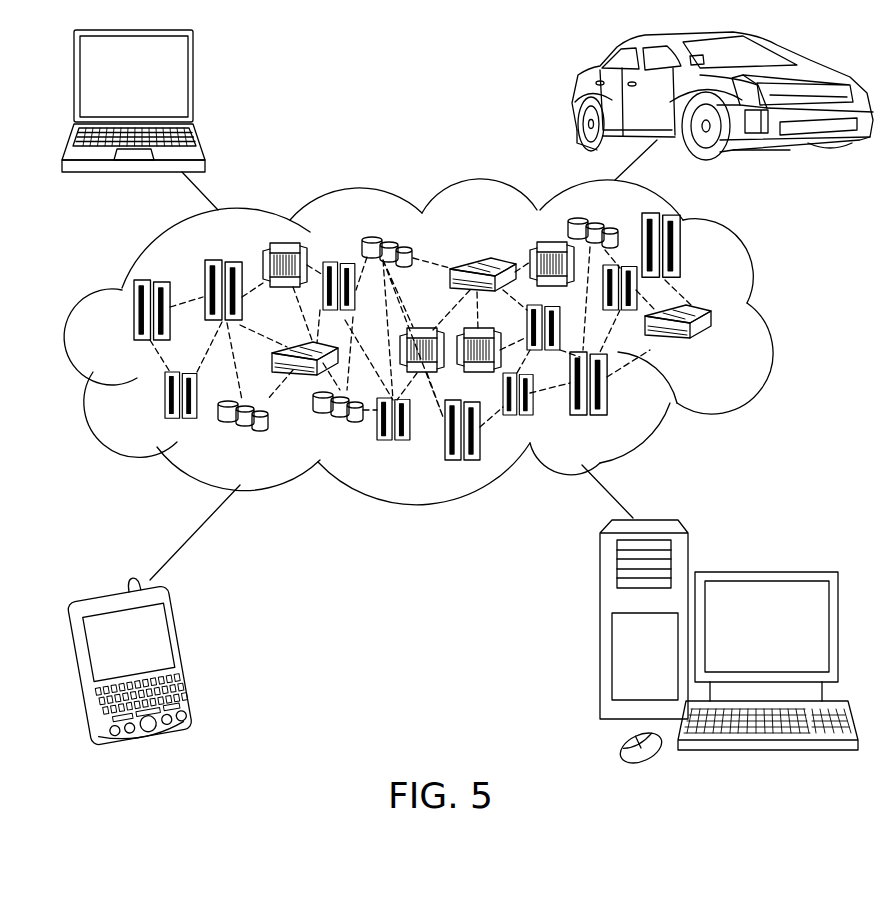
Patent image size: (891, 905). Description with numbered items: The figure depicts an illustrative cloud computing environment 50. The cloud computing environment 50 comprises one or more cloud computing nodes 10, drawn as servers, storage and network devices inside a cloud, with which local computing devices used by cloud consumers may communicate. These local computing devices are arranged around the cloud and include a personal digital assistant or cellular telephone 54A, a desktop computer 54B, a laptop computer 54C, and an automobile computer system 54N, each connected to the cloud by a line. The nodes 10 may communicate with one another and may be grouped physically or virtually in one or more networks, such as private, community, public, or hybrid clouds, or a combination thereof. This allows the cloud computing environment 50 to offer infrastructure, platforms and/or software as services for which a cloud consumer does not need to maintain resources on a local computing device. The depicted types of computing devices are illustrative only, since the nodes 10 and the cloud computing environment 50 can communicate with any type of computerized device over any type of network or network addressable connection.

The laptop computer 54C is at (193, 80).
The automobile computer system 54N is at (578, 101).
The personal digital assistant (PDA) or cellular telephone 54A is at (187, 653).
The desktop computer 54B is at (765, 570).
The cloud computing environment 50 is at (437, 342).
The cloud computing node 10 is at (715, 346).